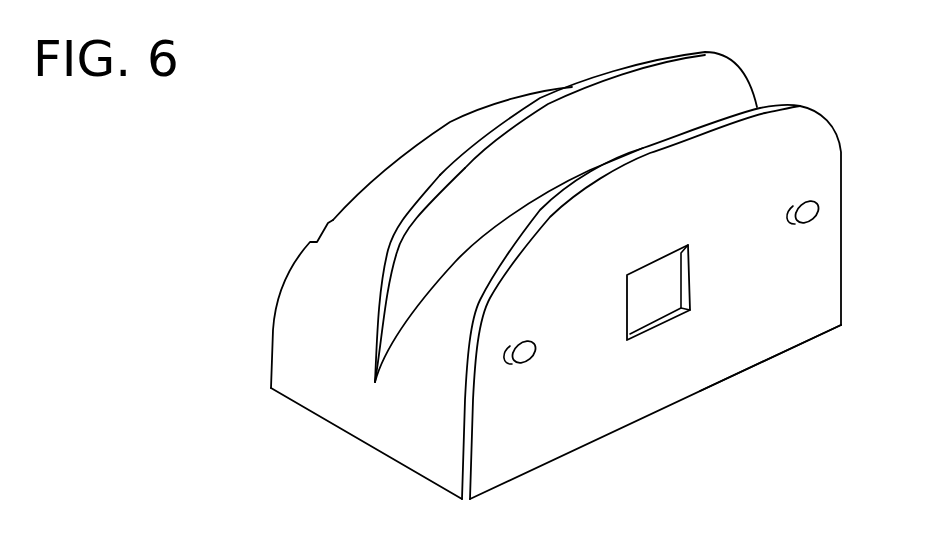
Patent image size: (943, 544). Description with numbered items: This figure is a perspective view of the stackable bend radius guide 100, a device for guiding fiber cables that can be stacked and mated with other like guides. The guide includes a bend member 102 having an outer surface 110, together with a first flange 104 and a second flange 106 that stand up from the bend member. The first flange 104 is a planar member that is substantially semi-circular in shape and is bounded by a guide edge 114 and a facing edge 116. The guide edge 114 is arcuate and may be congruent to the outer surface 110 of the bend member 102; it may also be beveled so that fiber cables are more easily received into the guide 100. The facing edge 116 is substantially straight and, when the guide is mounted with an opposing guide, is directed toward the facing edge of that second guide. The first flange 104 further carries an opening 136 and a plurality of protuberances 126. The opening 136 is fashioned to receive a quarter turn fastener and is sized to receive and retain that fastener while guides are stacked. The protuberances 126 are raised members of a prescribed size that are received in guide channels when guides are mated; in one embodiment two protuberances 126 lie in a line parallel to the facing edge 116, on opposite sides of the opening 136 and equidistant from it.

The stackable bend radius guide 100 is at (433, 97).
The bend member 102 is at (395, 192).
The first flange 104 is at (628, 375).
The second flange 106 is at (700, 52).
The outer surface 110 is at (300, 325).
The guide edge 114 is at (786, 107).
The facing edge 116 is at (783, 353).
The protuberances 126 is at (818, 225).
The opening 136 is at (658, 287).